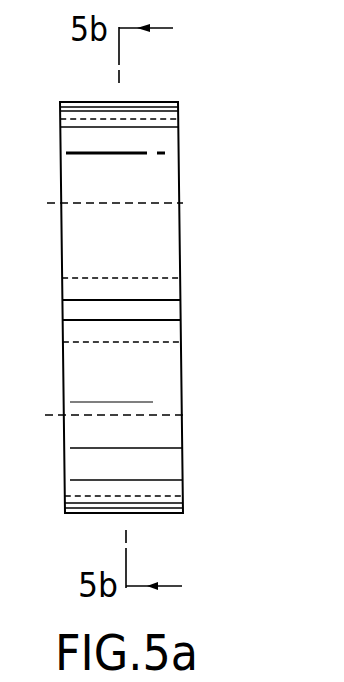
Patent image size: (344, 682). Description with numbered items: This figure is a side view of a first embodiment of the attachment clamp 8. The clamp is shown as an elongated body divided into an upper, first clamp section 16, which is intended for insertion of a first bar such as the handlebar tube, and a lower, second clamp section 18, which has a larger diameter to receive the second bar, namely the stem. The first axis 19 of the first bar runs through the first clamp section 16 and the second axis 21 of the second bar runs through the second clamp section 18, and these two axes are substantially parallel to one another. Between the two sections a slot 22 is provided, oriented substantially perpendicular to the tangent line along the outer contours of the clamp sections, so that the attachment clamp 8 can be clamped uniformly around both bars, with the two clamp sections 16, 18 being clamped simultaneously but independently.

The attachment clamp 8 is at (236, 116).
The first clamp section 16 is at (175, 187).
The first axis 19 is at (192, 202).
The slot 22 is at (170, 310).
The second axis 21 is at (190, 412).
The second clamp section 18 is at (178, 420).